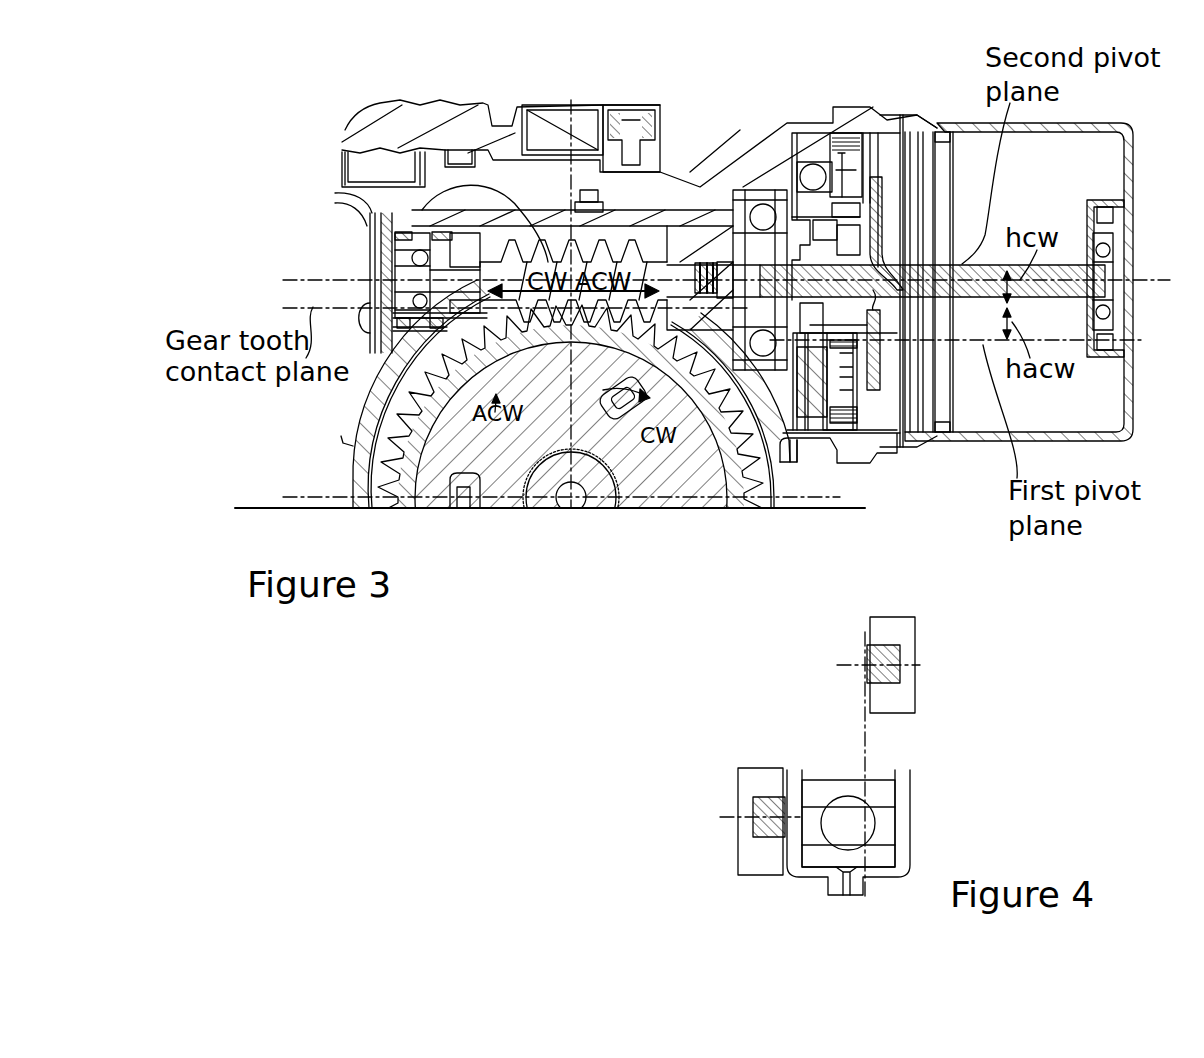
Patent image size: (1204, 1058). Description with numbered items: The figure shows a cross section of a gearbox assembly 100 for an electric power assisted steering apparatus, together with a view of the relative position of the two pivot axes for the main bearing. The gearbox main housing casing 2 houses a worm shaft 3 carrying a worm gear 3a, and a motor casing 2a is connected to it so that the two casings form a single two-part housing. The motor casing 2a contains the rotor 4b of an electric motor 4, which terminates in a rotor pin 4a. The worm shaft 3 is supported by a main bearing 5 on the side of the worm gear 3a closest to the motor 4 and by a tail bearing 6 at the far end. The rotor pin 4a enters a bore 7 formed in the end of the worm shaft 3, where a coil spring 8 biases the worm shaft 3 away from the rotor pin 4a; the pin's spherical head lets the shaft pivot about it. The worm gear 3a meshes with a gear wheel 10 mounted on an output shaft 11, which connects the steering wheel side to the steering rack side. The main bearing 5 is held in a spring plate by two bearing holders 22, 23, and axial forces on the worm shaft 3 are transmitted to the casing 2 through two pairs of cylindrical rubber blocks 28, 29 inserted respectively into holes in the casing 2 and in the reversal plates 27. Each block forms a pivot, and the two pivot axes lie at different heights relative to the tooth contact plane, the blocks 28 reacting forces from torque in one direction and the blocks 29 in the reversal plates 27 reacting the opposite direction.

In FIG. 3, the gearbox main housing casing 2 is at (733, 175).
In FIG. 3, the motor casing 2a is at (948, 118).
In FIG. 3, the worm shaft 3 is at (400, 340).
In FIG. 3, the worm gear 3a is at (392, 222).
In FIG. 3, the electric motor 4 is at (1090, 407).
In FIG. 3, the rotor pin 4a is at (742, 275).
In FIG. 3, the rotor 4b is at (967, 263).
In FIG. 3, the main bearing 5 is at (793, 442).
In FIG. 3, the tail bearing 6 is at (365, 378).
In FIG. 4, the tail bearing 6 is at (881, 790).
In FIG. 3, the bore 7 is at (697, 266).
In FIG. 3, the coil spring 8 is at (718, 275).
In FIG. 3, the gear wheel 10 is at (757, 509).
In FIG. 3, the output shaft 11 is at (537, 505).
In FIG. 4, the bearing holder 22 is at (912, 813).
In FIG. 4, the bearing holder 23 is at (810, 880).
In FIG. 4, the reversal plate 27 is at (893, 684).
In FIG. 3, the cylindrical rubber block 28 is at (733, 342).
In FIG. 4, the cylindrical rubber block 28 is at (767, 838).
In FIG. 3, the cylindrical rubber block 29 is at (766, 242).
In FIG. 3, the gearbox assembly 100 is at (906, 472).